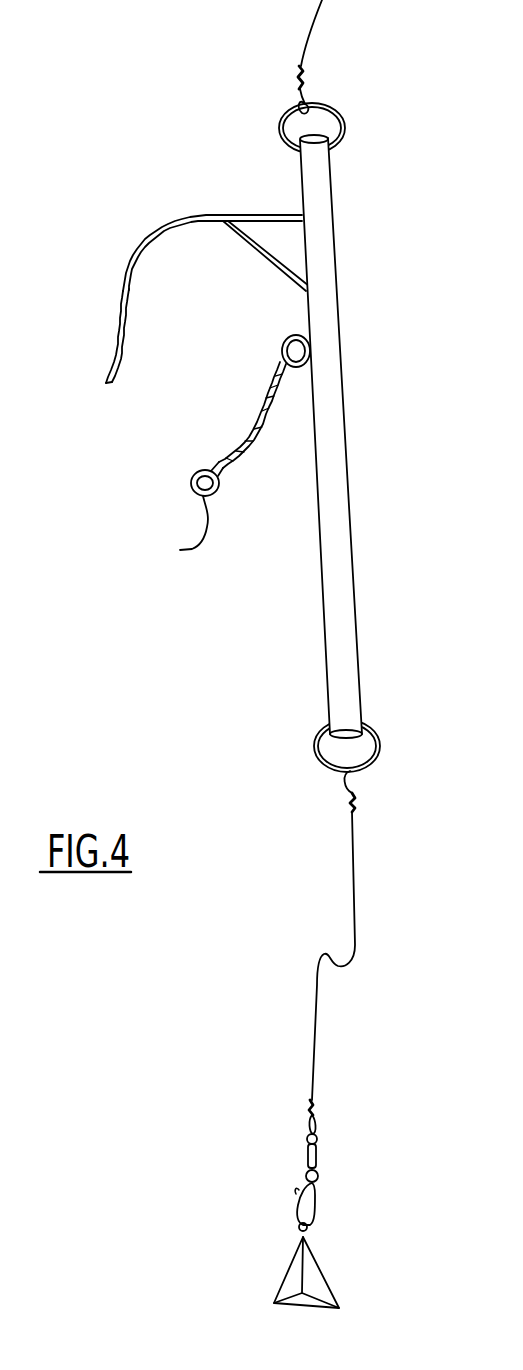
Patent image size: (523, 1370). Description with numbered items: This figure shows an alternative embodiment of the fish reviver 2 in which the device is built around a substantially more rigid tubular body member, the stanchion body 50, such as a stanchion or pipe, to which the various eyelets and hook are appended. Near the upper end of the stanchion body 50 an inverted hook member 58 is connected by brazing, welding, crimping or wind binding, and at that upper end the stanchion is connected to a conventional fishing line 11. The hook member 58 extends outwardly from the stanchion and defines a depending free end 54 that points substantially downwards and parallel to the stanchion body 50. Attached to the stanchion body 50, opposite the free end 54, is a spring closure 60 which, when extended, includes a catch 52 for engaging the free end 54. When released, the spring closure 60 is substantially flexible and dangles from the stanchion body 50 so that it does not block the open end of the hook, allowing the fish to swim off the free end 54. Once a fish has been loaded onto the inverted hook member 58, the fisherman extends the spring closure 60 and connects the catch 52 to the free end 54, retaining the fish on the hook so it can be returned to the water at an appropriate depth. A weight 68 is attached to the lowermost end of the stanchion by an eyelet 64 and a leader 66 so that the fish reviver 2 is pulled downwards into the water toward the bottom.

The fish reviver 2 is at (369, 149).
The fishing line 11 is at (320, 5).
The stanchion body 50 is at (337, 498).
The catch 52 is at (178, 531).
The free end 54 is at (108, 370).
The inverted hook member 58 is at (141, 248).
The spring closure 60 is at (250, 417).
The eyelet 64 is at (378, 744).
The leader 66 is at (354, 893).
The weight 68 is at (315, 1284).